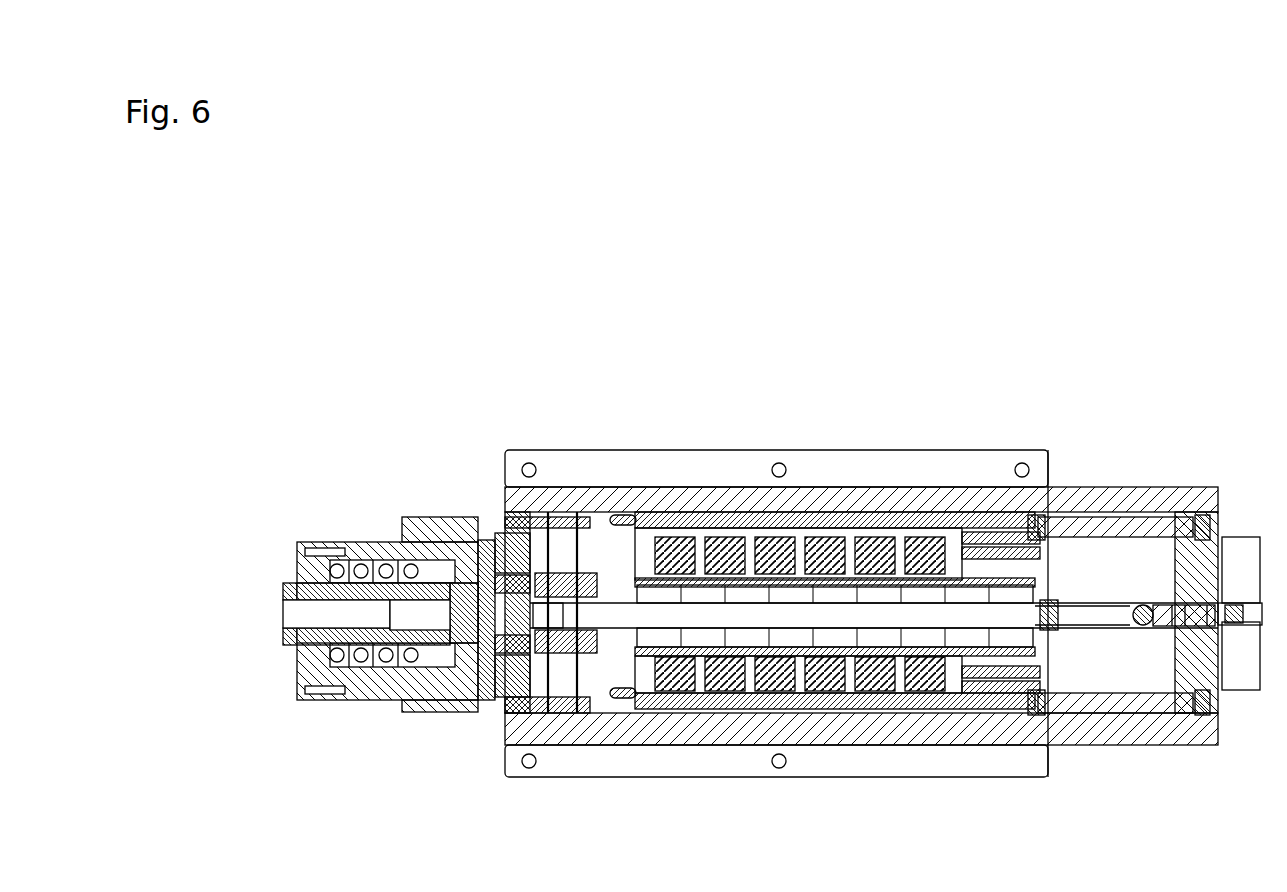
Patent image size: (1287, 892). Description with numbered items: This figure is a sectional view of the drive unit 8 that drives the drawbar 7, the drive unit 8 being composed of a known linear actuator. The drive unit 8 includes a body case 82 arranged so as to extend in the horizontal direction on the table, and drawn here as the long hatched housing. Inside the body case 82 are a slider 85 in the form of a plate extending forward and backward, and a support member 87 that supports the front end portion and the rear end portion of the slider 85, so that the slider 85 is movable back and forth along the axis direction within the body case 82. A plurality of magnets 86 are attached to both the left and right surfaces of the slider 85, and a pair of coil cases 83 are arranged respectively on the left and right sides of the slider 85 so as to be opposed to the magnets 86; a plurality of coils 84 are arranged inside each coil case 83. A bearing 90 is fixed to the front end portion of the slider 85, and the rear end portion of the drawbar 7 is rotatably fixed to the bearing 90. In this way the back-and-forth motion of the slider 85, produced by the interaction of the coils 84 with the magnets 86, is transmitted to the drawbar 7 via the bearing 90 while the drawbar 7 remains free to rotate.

The drawbar 7 is at (284, 612).
The drive unit 8 is at (802, 322).
The body case 82 is at (662, 489).
The coil case 83 is at (1012, 590).
The coil 84 is at (866, 527).
The slider 85 is at (621, 610).
The magnet 86 is at (960, 573).
The support member 87 is at (497, 532).
The bearing 90 is at (365, 541).